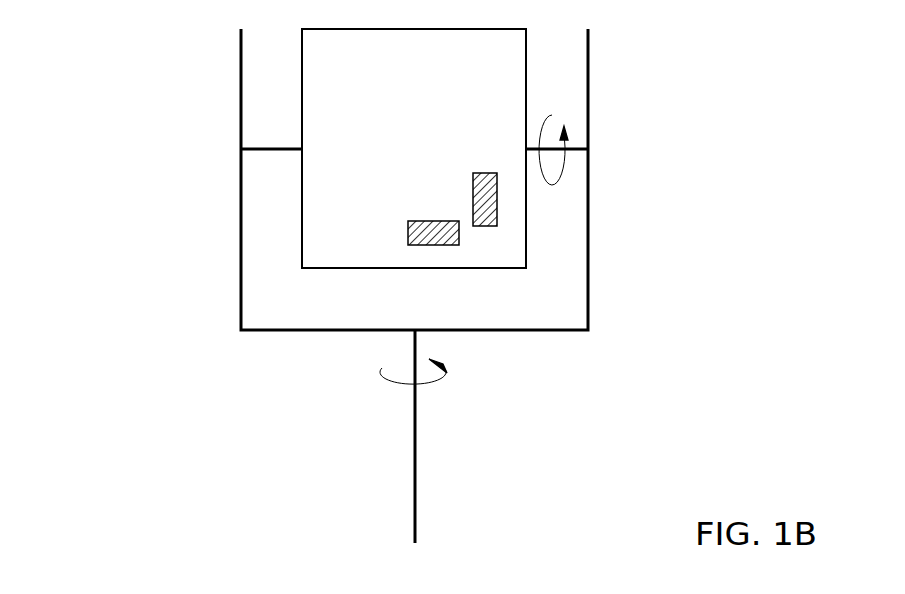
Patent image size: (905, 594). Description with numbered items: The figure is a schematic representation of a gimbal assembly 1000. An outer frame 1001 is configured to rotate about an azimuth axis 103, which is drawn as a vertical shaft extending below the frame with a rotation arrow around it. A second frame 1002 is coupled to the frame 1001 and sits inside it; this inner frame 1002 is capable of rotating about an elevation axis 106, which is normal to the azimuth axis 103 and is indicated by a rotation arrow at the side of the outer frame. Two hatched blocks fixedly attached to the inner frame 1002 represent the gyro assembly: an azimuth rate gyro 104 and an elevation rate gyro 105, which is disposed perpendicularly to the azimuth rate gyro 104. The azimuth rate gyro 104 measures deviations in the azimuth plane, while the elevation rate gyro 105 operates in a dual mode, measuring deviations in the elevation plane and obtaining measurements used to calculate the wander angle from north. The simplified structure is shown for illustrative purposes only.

The gimbal assembly 1000 is at (254, 381).
The frame 1001 is at (241, 267).
The frame 1002 is at (301, 108).
The azimuth axis 103 is at (415, 406).
The azimuth rate gyro 104 is at (407, 230).
The elevation rate gyro 105 is at (472, 190).
The elevation axis 106 is at (572, 148).